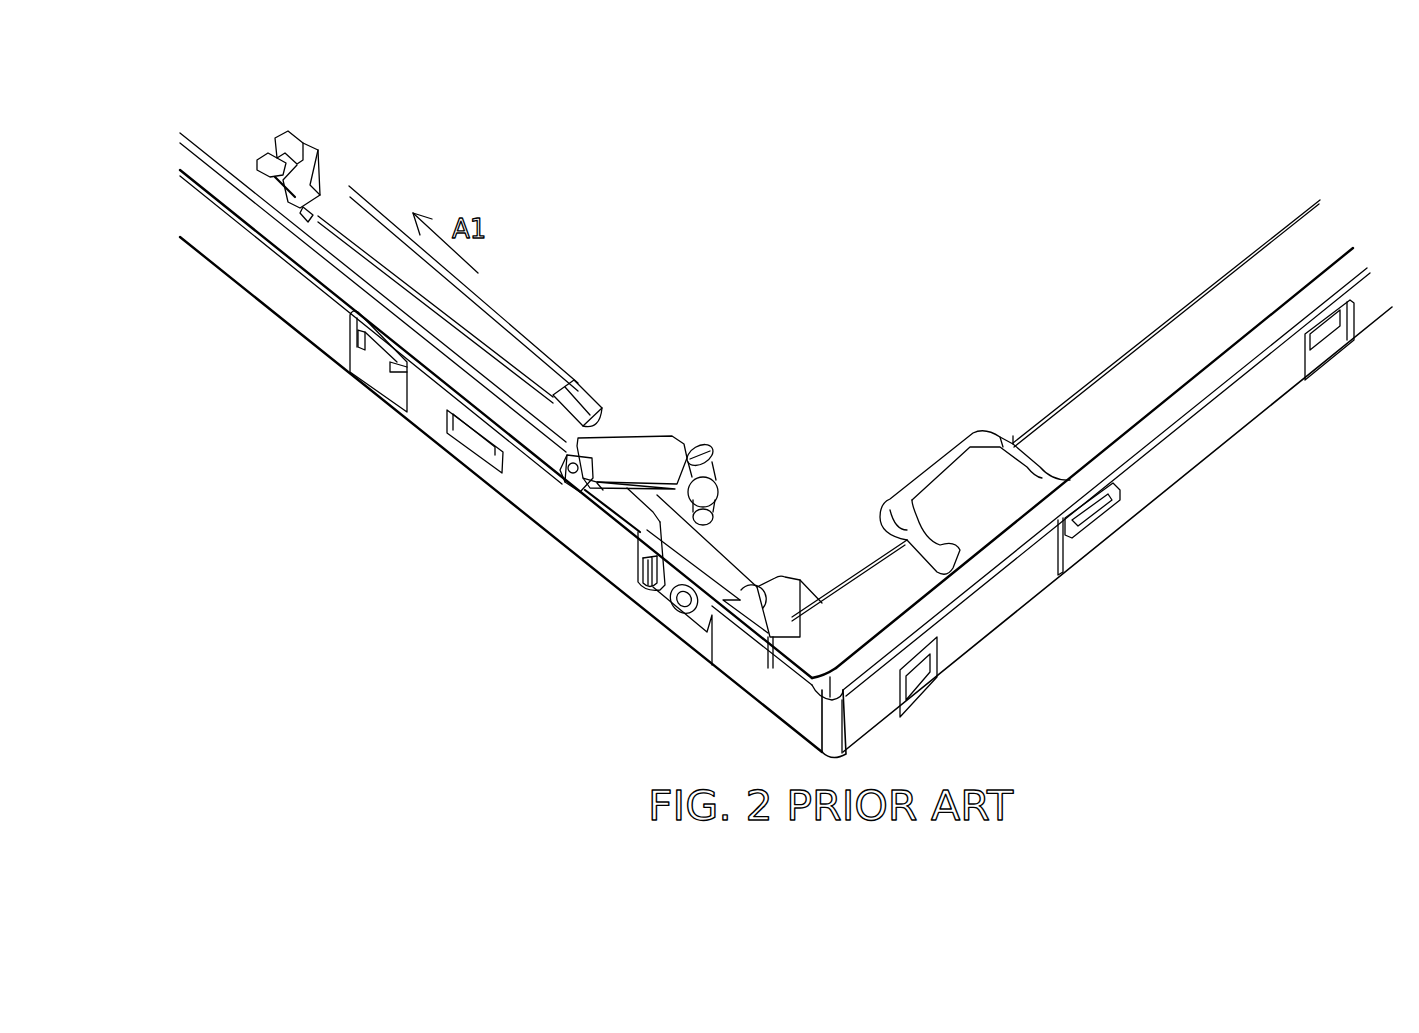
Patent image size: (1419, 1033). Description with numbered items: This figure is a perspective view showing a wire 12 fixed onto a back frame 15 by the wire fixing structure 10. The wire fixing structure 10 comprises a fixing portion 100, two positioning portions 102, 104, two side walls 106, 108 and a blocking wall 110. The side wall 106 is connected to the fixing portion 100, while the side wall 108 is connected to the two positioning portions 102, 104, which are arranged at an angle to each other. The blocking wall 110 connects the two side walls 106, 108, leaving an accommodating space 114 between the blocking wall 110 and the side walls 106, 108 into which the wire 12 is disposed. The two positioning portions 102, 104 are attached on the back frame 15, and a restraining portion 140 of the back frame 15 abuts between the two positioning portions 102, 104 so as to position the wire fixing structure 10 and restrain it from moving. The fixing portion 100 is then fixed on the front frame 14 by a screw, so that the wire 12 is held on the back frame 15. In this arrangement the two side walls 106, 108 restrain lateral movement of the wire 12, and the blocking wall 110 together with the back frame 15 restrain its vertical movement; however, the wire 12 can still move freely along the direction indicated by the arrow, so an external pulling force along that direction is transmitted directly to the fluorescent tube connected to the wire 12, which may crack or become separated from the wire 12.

The wire fixing structure 10 is at (690, 425).
The wire 12 is at (723, 570).
The front frame 14 is at (428, 413).
The back frame 15 is at (777, 575).
The fixing portion 100 is at (560, 480).
The positioning portion 102 is at (657, 584).
The positioning portion 104 is at (705, 448).
The side wall 106 is at (558, 398).
The side wall 108 is at (723, 487).
The blocking wall 110 is at (633, 450).
The accommodating space 114 is at (592, 506).
The restraining portion 140 is at (722, 496).